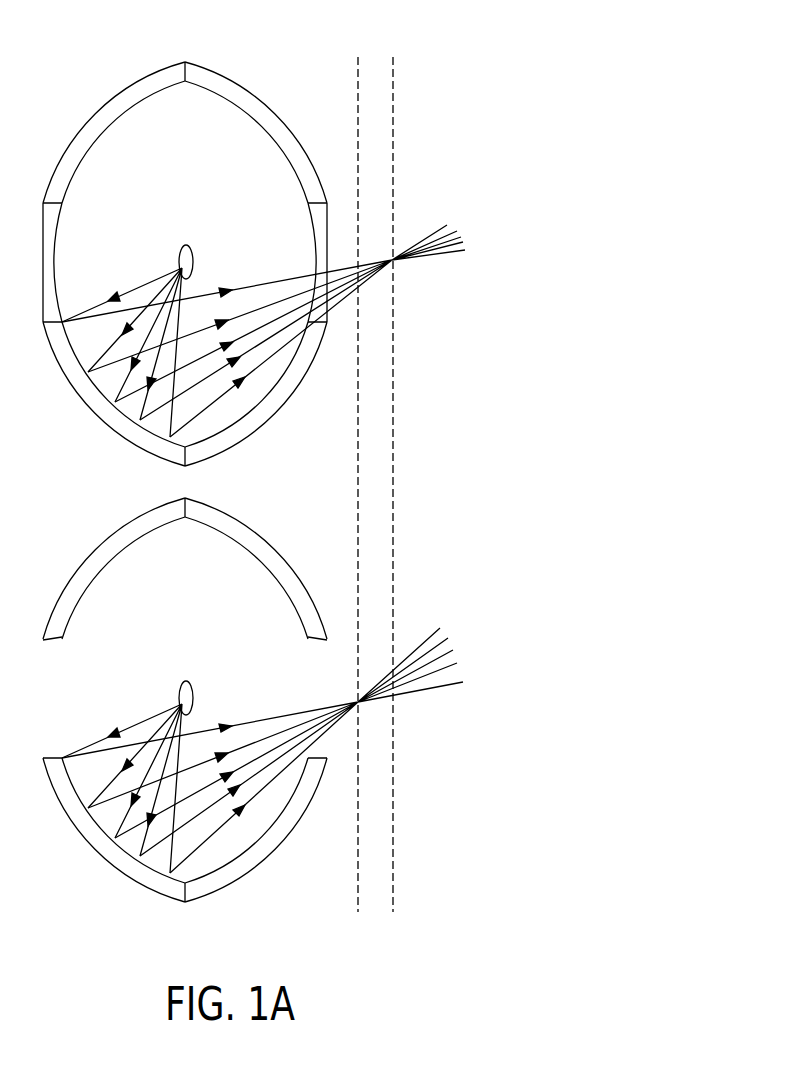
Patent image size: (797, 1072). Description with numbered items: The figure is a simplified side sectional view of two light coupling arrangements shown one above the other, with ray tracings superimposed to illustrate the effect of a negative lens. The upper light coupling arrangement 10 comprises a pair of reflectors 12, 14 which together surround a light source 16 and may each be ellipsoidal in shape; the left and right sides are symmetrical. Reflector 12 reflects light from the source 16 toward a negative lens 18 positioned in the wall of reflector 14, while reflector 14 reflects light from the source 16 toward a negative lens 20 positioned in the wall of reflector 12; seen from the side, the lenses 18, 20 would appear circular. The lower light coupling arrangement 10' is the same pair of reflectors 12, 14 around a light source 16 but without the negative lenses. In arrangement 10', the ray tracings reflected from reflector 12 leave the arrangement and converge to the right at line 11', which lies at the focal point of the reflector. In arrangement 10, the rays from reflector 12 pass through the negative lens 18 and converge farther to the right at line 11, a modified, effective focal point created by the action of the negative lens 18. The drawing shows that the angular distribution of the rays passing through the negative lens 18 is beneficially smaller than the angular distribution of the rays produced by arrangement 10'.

The light coupling arrangement 10 is at (182, 264).
The light coupling arrangement 10' is at (182, 700).
The line 11 is at (421, 484).
The line 11' is at (328, 484).
The reflector 12 is at (137, 90).
The reflector 14 is at (237, 92).
The light source 16 is at (188, 245).
The negative lens 18 is at (315, 237).
The negative lens 20 is at (52, 243).